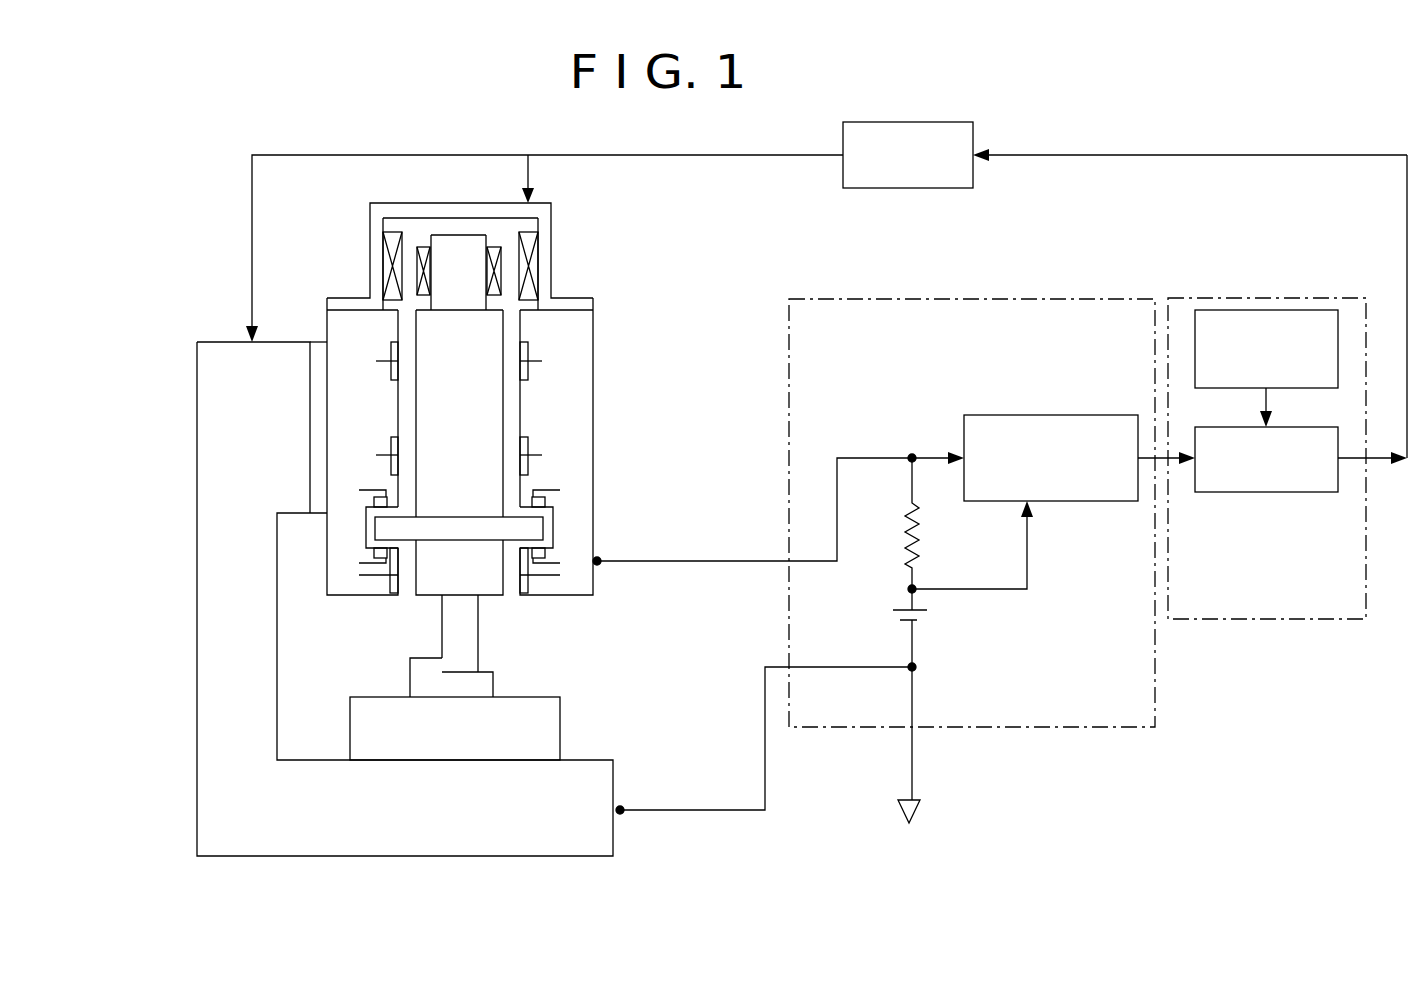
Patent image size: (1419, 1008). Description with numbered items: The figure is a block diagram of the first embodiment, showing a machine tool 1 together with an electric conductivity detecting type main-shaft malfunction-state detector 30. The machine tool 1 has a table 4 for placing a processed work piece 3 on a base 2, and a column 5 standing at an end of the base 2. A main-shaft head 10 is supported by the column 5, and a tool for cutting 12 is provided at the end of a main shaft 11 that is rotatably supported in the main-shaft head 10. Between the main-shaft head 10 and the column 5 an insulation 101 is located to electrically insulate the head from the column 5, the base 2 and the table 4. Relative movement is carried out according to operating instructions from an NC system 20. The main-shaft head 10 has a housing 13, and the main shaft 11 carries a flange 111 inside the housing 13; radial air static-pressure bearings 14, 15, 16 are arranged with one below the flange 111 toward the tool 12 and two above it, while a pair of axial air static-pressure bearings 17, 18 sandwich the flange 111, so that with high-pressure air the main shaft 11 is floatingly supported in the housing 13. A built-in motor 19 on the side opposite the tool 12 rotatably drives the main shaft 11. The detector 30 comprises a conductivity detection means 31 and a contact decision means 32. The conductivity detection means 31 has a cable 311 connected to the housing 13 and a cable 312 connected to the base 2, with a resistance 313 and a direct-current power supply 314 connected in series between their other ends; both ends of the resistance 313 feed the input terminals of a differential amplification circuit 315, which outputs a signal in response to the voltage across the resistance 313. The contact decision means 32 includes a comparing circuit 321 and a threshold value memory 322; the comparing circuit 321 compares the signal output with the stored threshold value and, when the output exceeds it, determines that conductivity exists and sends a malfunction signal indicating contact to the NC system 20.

The machine tool 1 is at (458, 557).
The base 2 is at (447, 840).
The processed work piece 3 is at (493, 685).
The table 4 is at (560, 728).
The column 5 is at (223, 342).
The main-shaft head 10 is at (595, 284).
The main shaft 11 is at (425, 597).
The tool for cutting 12 is at (438, 623).
The housing 13 is at (593, 333).
The air static-pressure bearing 14 is at (528, 585).
The air static-pressure bearing 15 is at (528, 443).
The air static-pressure bearing 16 is at (528, 369).
The air static-pressure bearing 17 is at (545, 553).
The air static-pressure bearing 18 is at (545, 500).
The built-in motor 19 is at (370, 245).
The NC system 20 is at (964, 188).
The main-shaft malfunction-state detector 30 is at (1157, 781).
The conductivity detection means 31 is at (1155, 693).
The contact decision means 32 is at (1310, 620).
The insulation 101 is at (319, 340).
The flange 111 is at (543, 528).
The cable 311 is at (755, 560).
The cable 312 is at (765, 775).
The resistance 313 is at (922, 538).
The direct-current power supply 314 is at (905, 622).
The differential amplification circuit 315 is at (1055, 415).
The comparing circuit 321 is at (1282, 492).
The threshold value memory 322 is at (1258, 310).